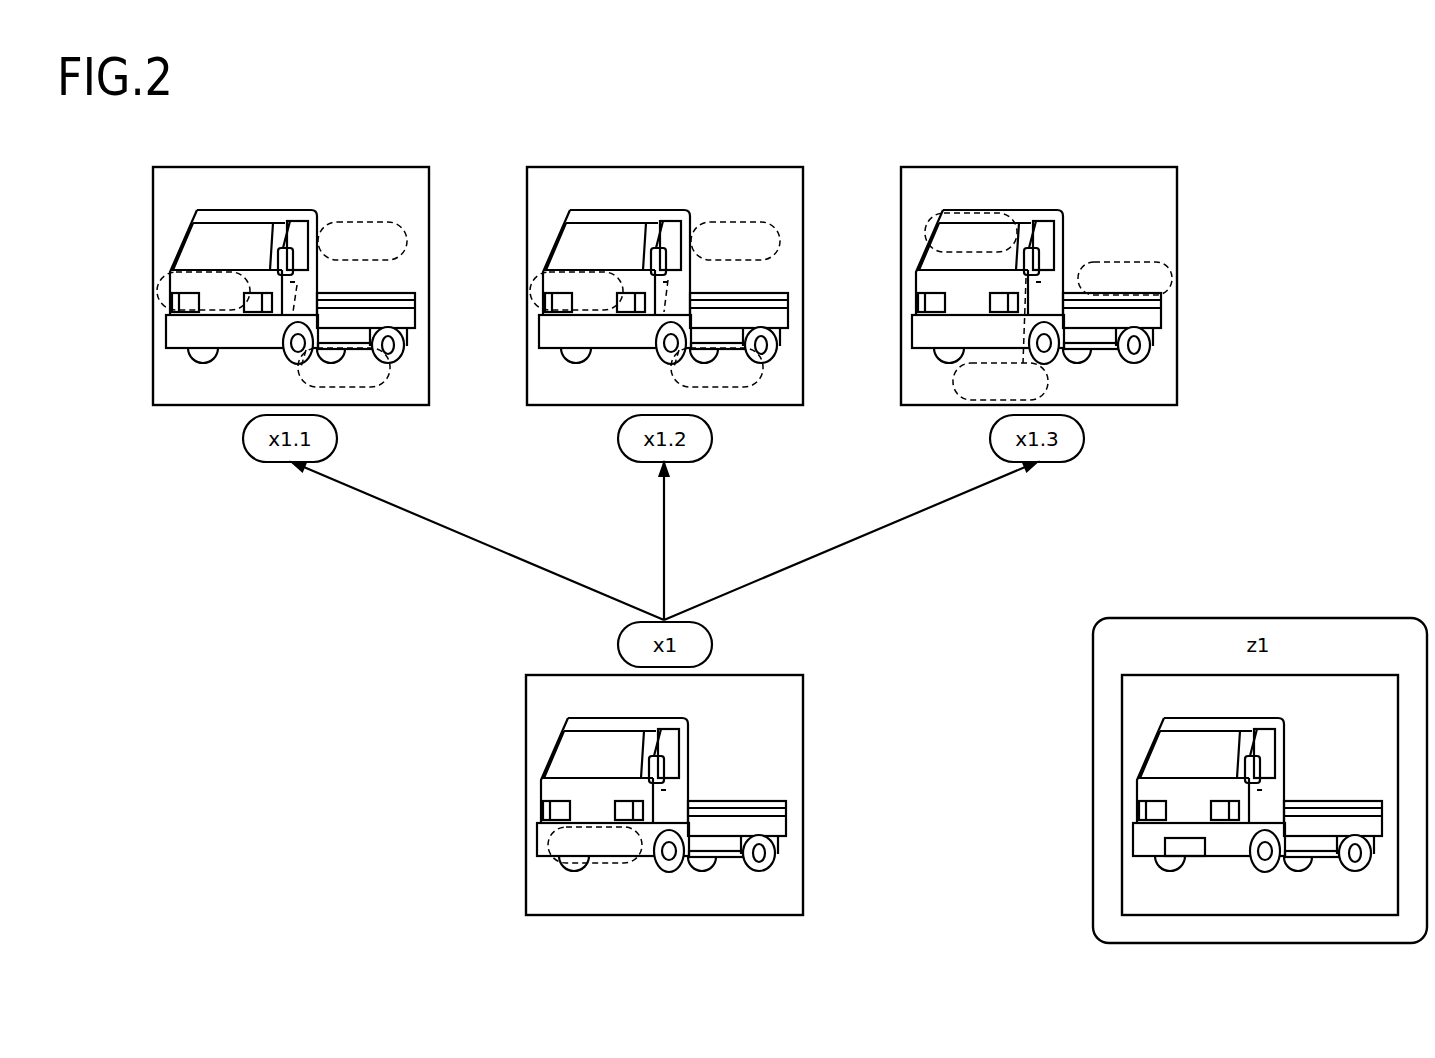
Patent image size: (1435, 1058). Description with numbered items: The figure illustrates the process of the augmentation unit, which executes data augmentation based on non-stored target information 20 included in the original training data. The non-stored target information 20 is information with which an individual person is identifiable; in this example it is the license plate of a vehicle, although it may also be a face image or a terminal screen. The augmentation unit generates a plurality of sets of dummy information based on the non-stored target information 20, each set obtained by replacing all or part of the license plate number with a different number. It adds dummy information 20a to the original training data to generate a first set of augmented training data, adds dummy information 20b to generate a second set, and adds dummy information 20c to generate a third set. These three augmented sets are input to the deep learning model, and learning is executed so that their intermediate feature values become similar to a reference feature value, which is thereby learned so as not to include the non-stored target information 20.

The dummy information 20a is at (343, 222).
The dummy information 20b is at (703, 222).
The dummy information 20c is at (1108, 262).
The non-stored target information 20 is at (548, 843).